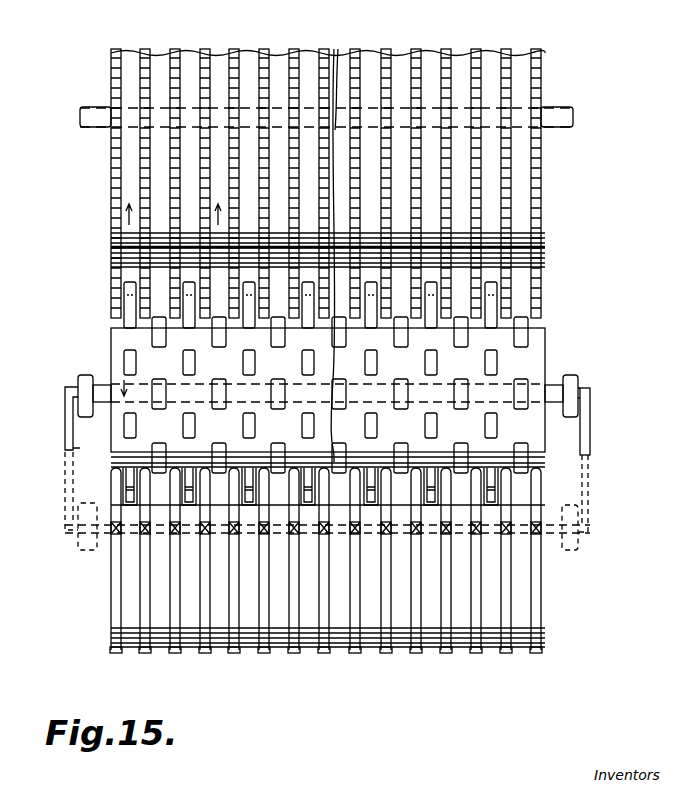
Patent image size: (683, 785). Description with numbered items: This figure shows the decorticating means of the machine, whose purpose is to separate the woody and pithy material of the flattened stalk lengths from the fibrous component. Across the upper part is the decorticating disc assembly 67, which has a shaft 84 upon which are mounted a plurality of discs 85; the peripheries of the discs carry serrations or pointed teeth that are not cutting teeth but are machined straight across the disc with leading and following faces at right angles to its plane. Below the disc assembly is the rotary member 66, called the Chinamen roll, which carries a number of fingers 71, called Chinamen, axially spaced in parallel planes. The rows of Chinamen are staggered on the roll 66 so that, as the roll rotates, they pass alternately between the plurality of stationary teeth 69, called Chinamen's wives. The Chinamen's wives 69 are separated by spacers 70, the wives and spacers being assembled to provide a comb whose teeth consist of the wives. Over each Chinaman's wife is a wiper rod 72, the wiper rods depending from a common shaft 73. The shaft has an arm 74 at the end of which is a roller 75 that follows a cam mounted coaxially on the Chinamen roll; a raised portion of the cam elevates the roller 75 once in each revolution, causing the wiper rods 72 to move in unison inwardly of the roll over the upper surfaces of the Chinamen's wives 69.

The rotary member 66 is at (535, 362).
The decorticating disc assembly 67 is at (541, 160).
The stationary teeth 69 is at (138, 488).
The spacers 70 is at (143, 653).
The fingers 71 is at (111, 318).
The wiper rod 72 is at (205, 537).
The common shaft 73 is at (88, 552).
The arm 74 is at (65, 433).
The roller 75 is at (86, 376).
The shaft 84 is at (573, 117).
The discs 85 is at (543, 210).